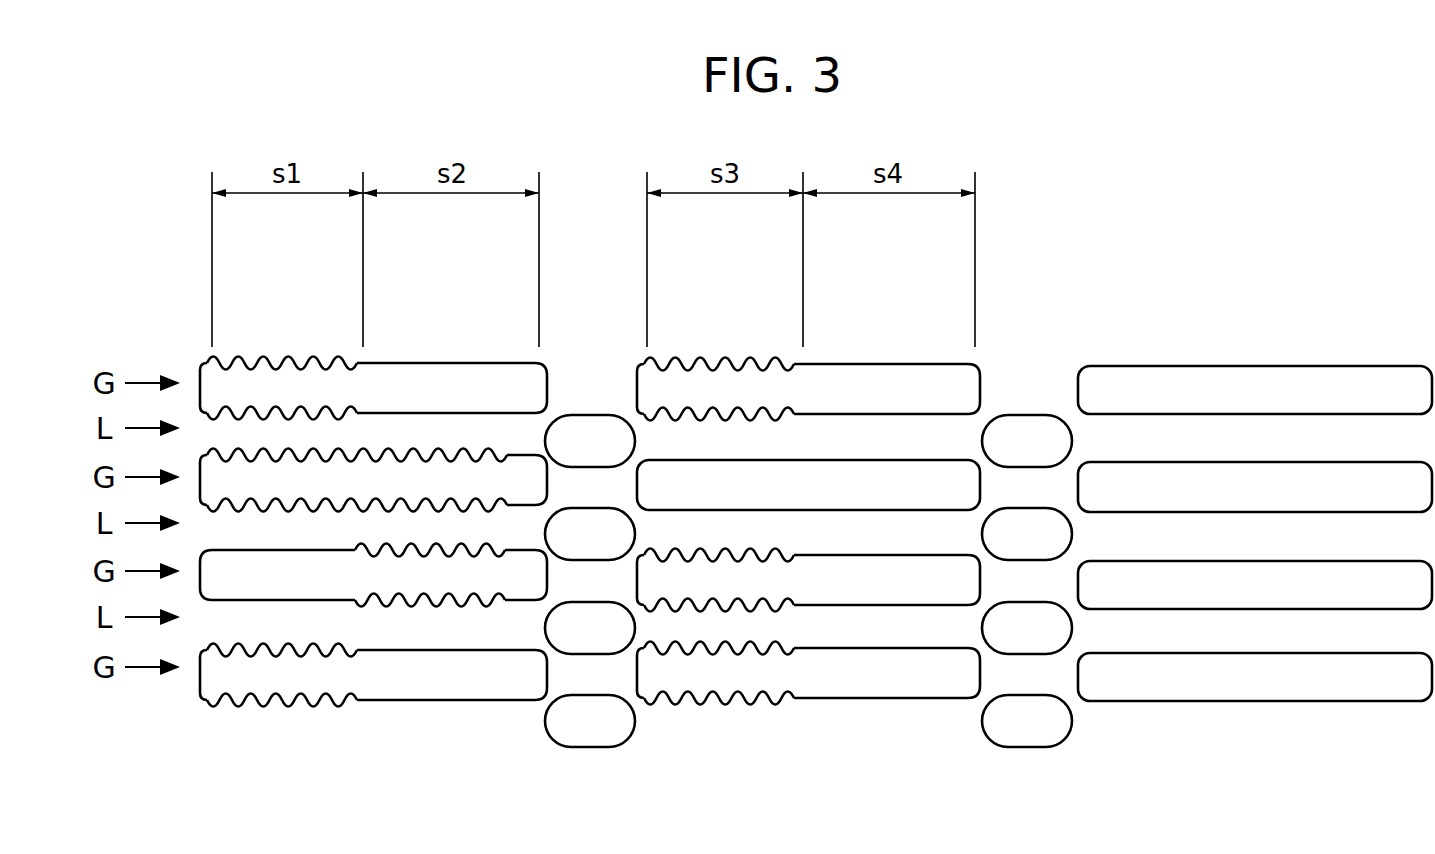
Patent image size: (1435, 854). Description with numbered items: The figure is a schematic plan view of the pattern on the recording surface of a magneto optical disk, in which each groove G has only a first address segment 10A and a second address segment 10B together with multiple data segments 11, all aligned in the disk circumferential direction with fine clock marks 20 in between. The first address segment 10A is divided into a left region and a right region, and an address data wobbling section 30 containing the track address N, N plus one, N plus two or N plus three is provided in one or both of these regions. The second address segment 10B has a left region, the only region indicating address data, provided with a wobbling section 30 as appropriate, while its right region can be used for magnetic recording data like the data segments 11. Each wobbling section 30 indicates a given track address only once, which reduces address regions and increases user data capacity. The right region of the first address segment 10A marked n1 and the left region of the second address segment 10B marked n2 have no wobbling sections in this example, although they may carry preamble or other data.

The first address segment 10A is at (475, 462).
The second address segment 10B is at (812, 378).
The data segments 11 is at (1237, 472).
The fine clock marks 20 is at (588, 633).
The address data wobbling section 30 is at (505, 546).
The right region s2 of the first address segment marked n1 is at (411, 360).
The left region s3 of the second address segment marked n2 is at (762, 456).